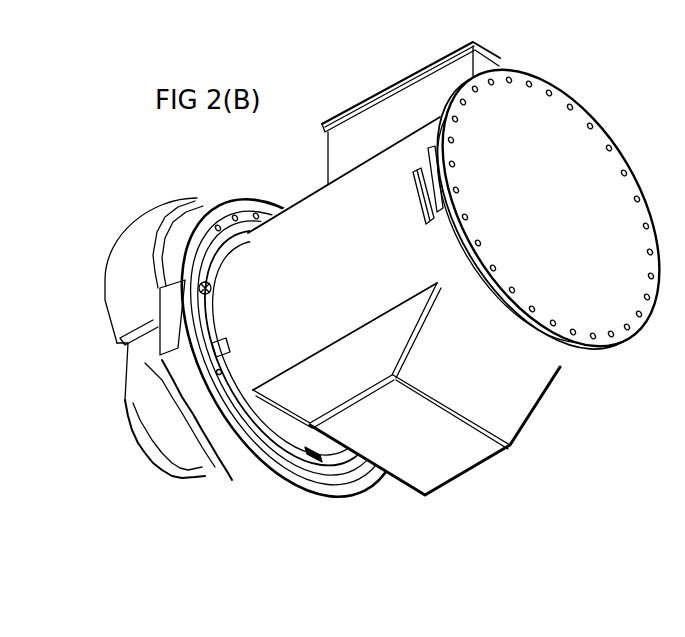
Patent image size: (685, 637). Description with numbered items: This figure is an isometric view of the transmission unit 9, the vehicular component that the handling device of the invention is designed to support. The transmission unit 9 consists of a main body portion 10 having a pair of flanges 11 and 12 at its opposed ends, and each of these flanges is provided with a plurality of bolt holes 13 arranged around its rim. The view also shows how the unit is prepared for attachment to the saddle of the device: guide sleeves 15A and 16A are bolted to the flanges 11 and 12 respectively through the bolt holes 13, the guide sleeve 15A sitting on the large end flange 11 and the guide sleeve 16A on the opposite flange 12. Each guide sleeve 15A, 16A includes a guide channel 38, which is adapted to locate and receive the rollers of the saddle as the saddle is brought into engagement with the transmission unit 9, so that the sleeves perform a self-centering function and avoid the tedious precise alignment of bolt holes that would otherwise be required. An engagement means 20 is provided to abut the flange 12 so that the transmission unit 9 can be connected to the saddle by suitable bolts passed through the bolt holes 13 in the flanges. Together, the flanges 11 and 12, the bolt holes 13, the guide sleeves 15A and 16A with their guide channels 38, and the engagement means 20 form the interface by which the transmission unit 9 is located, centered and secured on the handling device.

The transmission unit 9 is at (392, 77).
The main body portion 10 is at (404, 306).
The flange 11 is at (541, 207).
The flange 12 is at (237, 203).
The bolt holes 13 is at (641, 196).
The guide sleeve 15A is at (500, 330).
The guide sleeve 16A is at (293, 457).
The engagement means 20 is at (205, 310).
The guide channel 38 is at (432, 198).